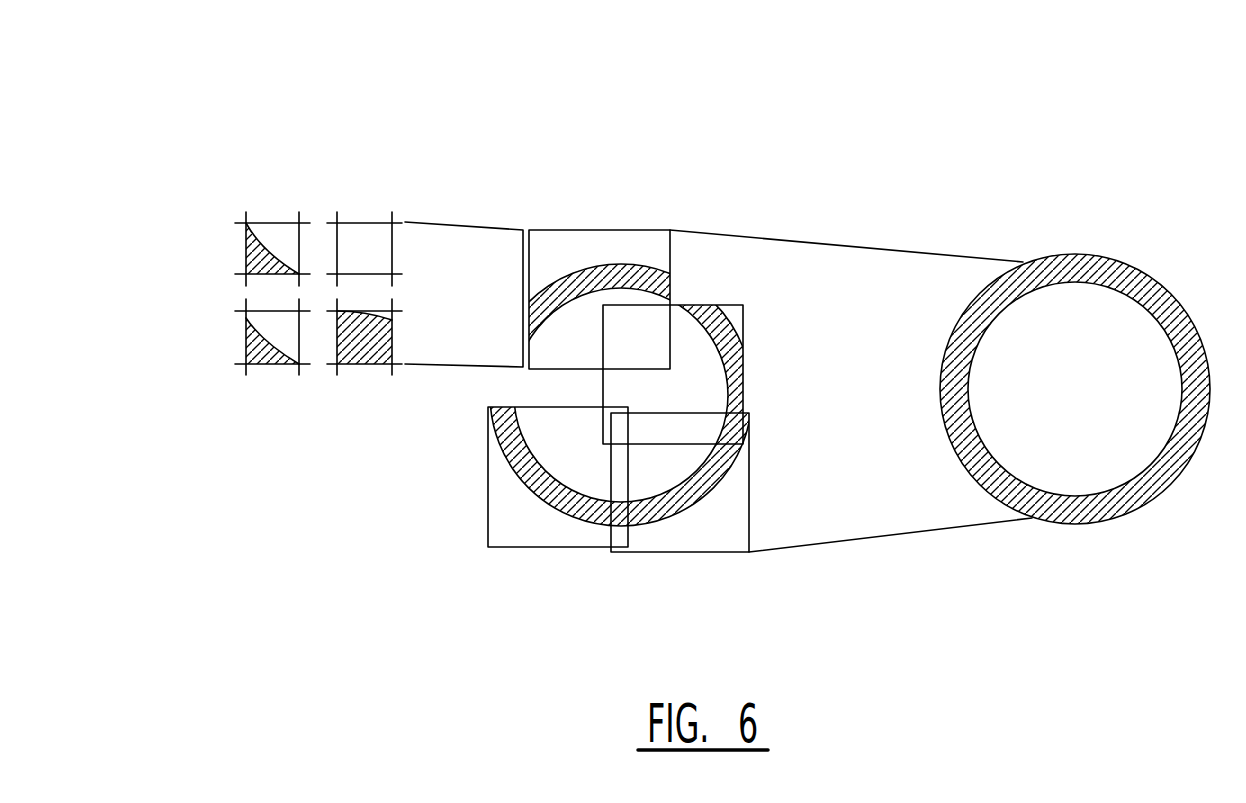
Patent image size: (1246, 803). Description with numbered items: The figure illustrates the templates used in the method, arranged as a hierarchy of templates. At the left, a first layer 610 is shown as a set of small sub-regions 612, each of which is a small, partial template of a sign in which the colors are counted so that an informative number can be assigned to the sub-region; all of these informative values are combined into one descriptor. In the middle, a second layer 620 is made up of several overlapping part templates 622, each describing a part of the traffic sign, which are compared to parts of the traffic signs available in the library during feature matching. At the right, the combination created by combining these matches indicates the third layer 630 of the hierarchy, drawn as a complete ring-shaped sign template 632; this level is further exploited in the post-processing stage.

The image pixel squares 610 is at (284, 352).
The pixel 612 is at (270, 217).
The overlapping image windows 620 is at (610, 364).
The window / image patch 622 is at (588, 229).
The third layer 630 is at (1075, 388).
The tube wall ring 632 is at (1072, 250).